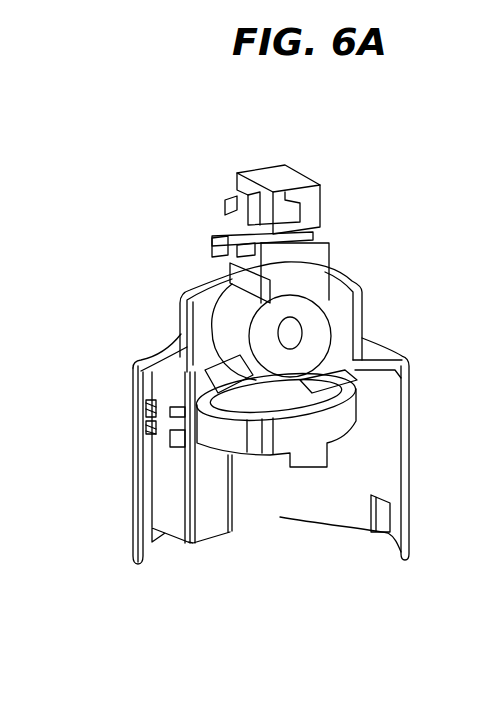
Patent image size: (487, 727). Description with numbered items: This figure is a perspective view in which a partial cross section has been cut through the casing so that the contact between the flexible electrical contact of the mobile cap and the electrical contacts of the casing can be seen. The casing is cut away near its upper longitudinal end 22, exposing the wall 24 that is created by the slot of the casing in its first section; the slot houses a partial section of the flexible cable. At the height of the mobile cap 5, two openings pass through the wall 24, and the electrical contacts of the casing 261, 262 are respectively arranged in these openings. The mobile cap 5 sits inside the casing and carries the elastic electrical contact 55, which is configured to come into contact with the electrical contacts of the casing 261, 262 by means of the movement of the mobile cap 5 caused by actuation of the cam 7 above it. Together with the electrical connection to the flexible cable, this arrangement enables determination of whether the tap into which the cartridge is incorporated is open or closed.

The mobile cap 5 is at (333, 432).
The cam 7 is at (310, 258).
The upper longitudinal end 22 is at (354, 277).
The wall 24 is at (168, 517).
The elastic electrical contact 55 is at (233, 437).
The electrical contact of the casing 261 is at (150, 438).
The electrical contact of the casing 262 is at (153, 410).